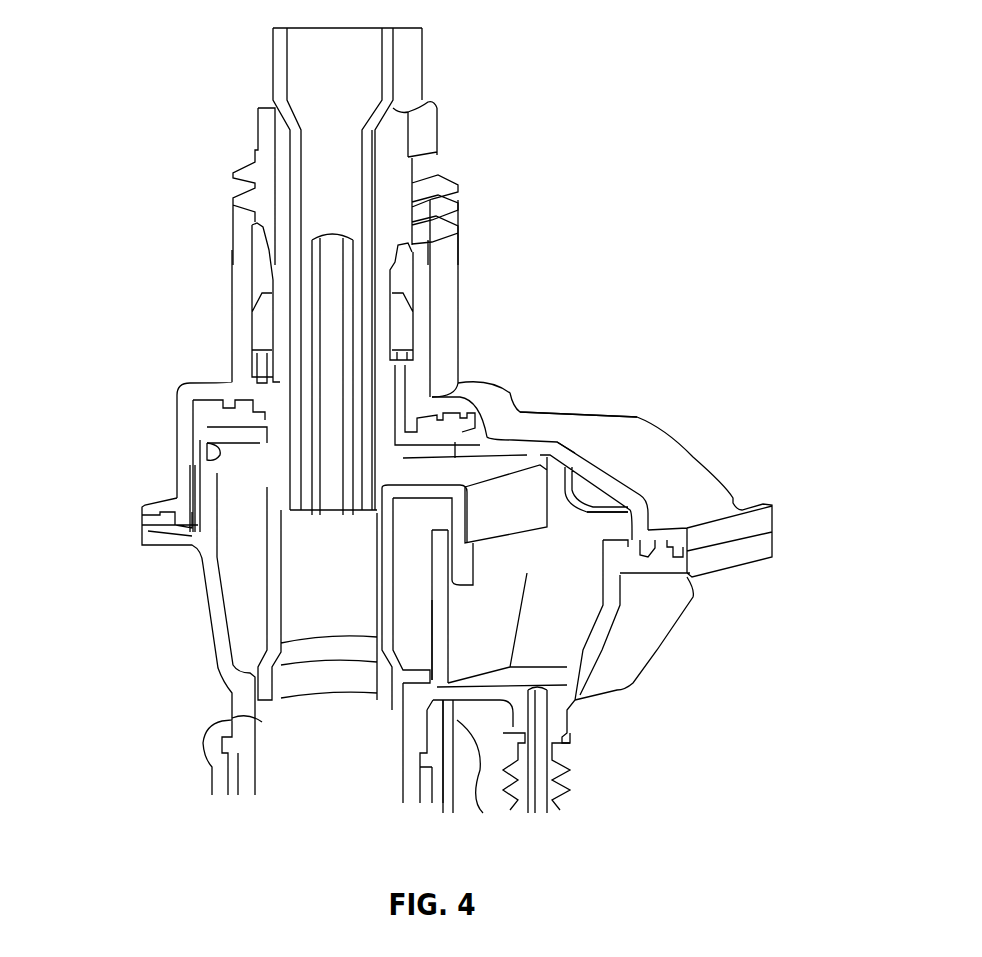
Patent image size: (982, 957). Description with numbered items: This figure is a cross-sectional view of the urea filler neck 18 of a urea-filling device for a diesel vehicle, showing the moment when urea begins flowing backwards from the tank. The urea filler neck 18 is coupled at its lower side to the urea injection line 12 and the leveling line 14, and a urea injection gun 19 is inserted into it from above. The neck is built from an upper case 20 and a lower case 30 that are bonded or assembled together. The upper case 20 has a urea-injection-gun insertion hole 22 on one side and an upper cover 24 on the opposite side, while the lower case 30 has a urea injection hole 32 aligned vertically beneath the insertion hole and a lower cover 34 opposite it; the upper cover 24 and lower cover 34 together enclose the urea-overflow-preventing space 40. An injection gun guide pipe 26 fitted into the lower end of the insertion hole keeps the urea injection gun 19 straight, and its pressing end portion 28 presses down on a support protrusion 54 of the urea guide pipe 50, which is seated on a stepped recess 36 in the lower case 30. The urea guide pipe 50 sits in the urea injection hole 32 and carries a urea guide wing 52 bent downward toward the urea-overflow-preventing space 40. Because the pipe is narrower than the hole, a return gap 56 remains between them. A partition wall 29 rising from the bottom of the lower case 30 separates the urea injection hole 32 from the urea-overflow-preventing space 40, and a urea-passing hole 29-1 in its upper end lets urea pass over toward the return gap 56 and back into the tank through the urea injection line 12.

The urea injection line 12 is at (220, 778).
The leveling line 14 is at (570, 790).
The urea filler neck 18 is at (655, 385).
The urea injection gun 19 is at (418, 78).
The upper case 20 is at (573, 410).
The urea-injection-gun insertion hole 22 is at (282, 187).
The upper cover 24 is at (600, 425).
The injection gun guide pipe 26 is at (252, 387).
The pressing end portion 28 is at (215, 425).
The partition wall 29 is at (468, 607).
The urea-passing hole 29-1 is at (457, 562).
The lower case 30 is at (203, 615).
The urea injection hole 32 is at (258, 722).
The lower cover 34 is at (620, 665).
The stepped recess 36 is at (212, 462).
The urea-overflow-preventing space 40 is at (573, 547).
The urea guide pipe 50 is at (262, 570).
The urea guide wing 52 is at (515, 515).
The support protrusion 54 is at (215, 445).
The return gap 56 is at (443, 690).